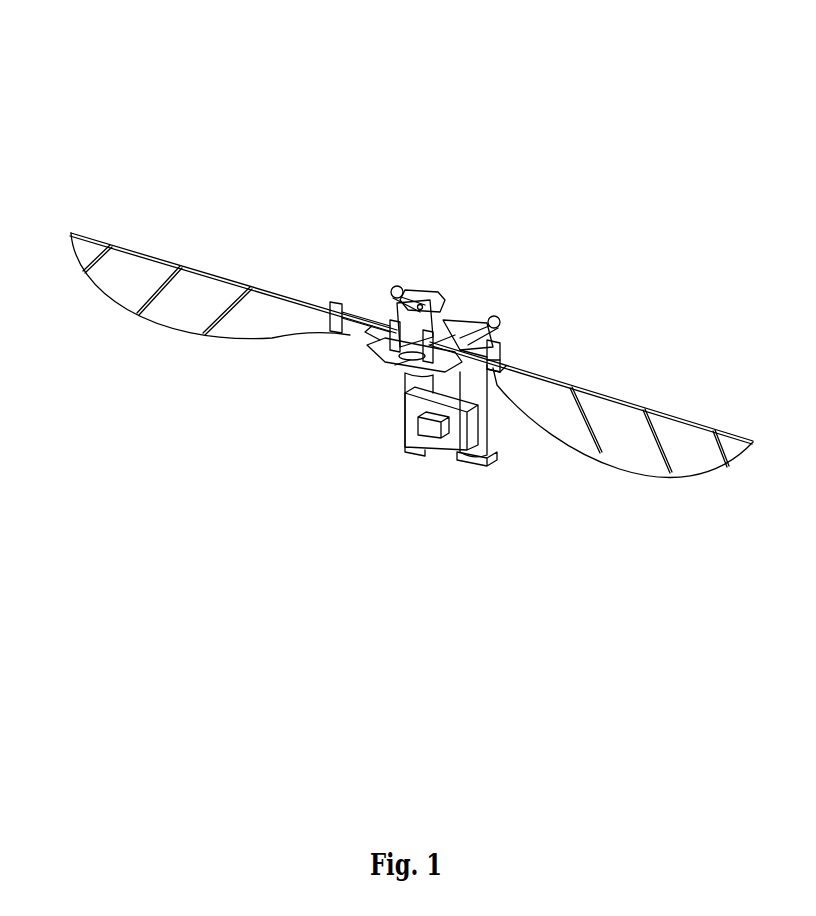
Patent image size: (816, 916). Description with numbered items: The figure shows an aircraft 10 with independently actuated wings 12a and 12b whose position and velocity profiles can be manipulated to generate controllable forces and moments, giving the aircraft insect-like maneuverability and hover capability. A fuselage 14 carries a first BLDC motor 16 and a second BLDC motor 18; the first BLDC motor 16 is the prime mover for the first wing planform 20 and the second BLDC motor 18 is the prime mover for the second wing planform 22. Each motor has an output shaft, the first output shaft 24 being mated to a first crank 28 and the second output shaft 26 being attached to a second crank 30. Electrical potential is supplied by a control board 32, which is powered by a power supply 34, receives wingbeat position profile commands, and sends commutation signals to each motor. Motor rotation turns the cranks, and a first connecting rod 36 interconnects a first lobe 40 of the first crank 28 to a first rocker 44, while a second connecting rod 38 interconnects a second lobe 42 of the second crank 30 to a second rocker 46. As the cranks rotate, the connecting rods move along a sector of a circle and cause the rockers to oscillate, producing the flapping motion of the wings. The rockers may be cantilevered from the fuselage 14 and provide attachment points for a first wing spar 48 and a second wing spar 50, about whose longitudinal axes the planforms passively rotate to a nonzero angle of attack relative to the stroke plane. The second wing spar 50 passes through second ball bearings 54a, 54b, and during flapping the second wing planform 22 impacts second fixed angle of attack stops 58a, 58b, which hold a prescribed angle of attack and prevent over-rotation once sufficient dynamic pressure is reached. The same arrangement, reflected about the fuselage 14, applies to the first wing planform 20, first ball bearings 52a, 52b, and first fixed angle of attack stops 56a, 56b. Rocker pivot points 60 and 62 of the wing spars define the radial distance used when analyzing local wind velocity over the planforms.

The aircraft 10 is at (450, 87).
The wing 12a is at (82, 199).
The wing 12b is at (783, 421).
The fuselage 14 is at (385, 330).
The first brushless direct current (BLDC) motor 16 is at (403, 390).
The second brushless direct current (BLDC) motor 18 is at (490, 380).
The first wing planform 20 is at (172, 315).
The second wing planform 22 is at (627, 447).
The first output shaft 24 is at (420, 305).
The second output shaft 26 is at (471, 315).
The first crank 28 is at (422, 300).
The second crank 30 is at (480, 314).
The control board 32 is at (455, 438).
The power supply 34 is at (428, 428).
The first connecting rod 36 is at (380, 312).
The second connecting rod 38 is at (495, 355).
The first lobe 40 is at (378, 318).
The second lobe 42 is at (500, 333).
The first rocker 44 is at (372, 337).
The second rocker 46 is at (497, 368).
The first wing spar 48 is at (163, 257).
The second wing spar 50 is at (697, 418).
The first ball bearing 52a is at (340, 310).
The first ball bearing 52b is at (343, 310).
The second ball bearing 54a is at (472, 308).
The second ball bearing 54b is at (503, 357).
The first fixed angle of attack stop 56a is at (320, 316).
The first fixed angle of attack stop 56b is at (327, 307).
The second wing fixed angle of attack stop 58a is at (510, 367).
The second fixed angle of attack stop 58b is at (508, 368).
The rocker pivot point 60 is at (372, 345).
The rocker pivot point 62 is at (400, 357).